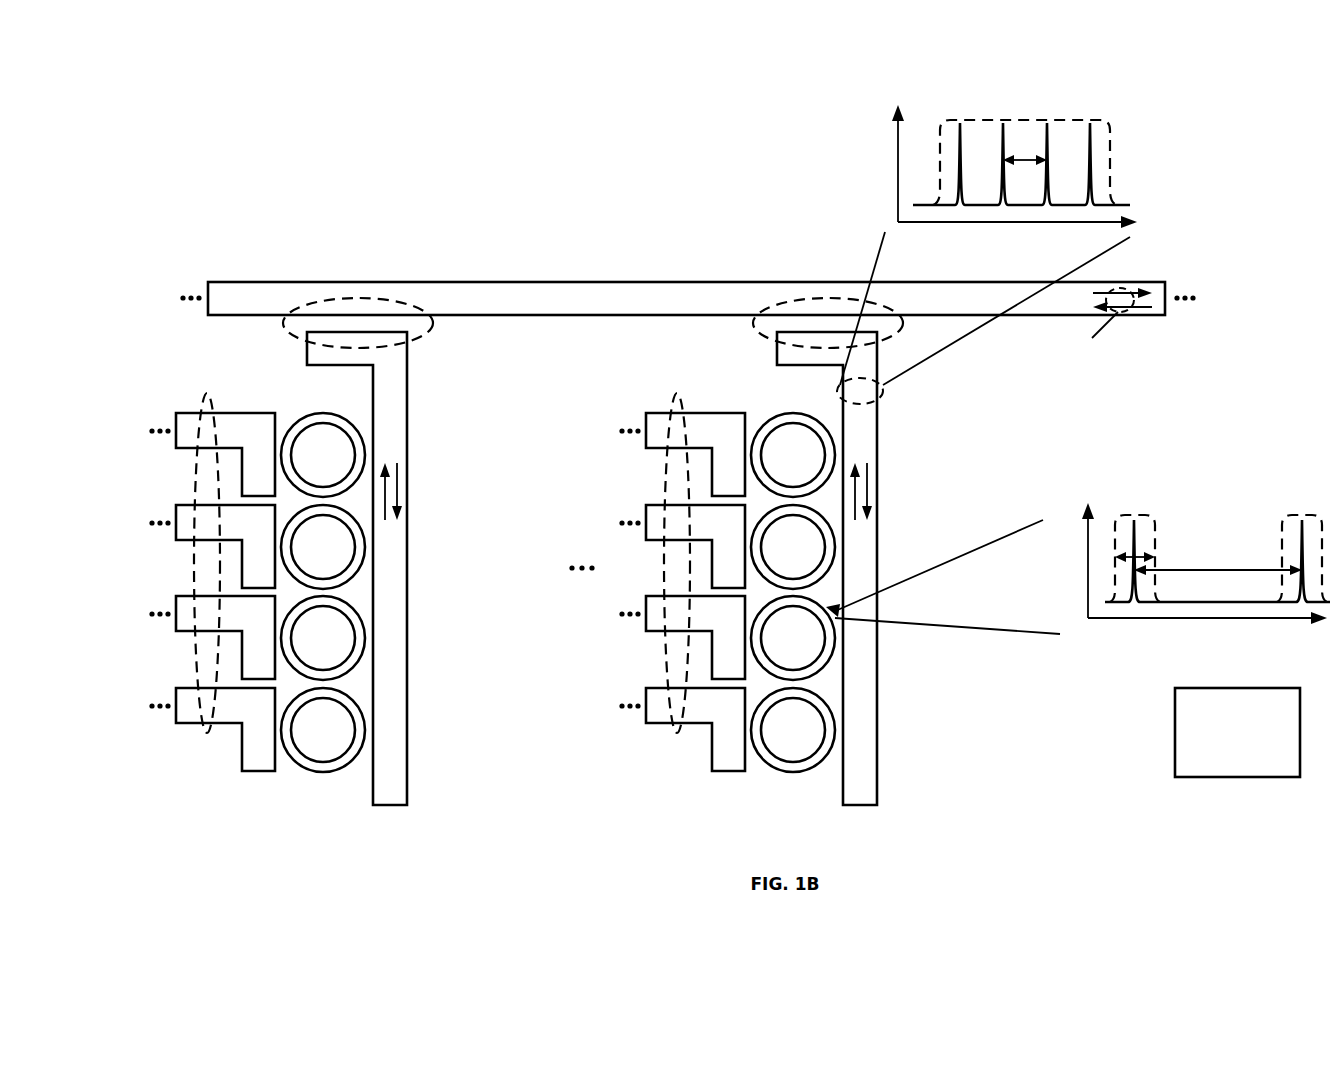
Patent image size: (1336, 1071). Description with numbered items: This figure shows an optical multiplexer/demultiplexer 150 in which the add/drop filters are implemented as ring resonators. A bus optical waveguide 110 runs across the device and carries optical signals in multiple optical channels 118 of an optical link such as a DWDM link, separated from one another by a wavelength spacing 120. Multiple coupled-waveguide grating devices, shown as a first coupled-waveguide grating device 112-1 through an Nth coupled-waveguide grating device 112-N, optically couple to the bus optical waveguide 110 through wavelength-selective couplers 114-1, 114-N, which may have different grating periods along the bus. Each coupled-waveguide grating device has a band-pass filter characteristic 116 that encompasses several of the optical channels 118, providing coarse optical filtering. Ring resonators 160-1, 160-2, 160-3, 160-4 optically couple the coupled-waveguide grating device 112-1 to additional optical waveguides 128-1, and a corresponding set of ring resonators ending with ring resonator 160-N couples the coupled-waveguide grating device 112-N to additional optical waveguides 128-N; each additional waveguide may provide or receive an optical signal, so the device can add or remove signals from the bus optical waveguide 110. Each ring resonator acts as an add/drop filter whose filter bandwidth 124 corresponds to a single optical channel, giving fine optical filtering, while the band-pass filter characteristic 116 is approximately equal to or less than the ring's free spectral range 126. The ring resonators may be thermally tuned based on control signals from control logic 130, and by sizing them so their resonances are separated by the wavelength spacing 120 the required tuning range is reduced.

The optical multiplexer/demultiplexer 150 is at (412, 108).
The bus optical waveguide 110 is at (430, 298).
The wavelength-selective coupler 114-1 is at (358, 298).
The wavelength-selective coupler 114-N is at (795, 298).
The coupled-waveguide grating device 112-1 is at (392, 787).
The coupled-waveguide grating device 112-N is at (862, 787).
The optical waveguide 128-1 is at (207, 409).
The optical waveguides 128-N is at (677, 409).
The ring resonator 160-1 is at (362, 455).
The ring resonator 160-2 is at (362, 547).
The ring resonator 160-3 is at (362, 638).
The ring resonator 160-4 is at (362, 730).
The ring resonator 160-N is at (832, 731).
The optical channels 118 is at (1090, 112).
The band-pass filter characteristic 116 is at (1113, 172).
The wavelength spacing 120 is at (1040, 162).
The filter bandwidth 124 is at (1142, 557).
The free spectral range (FSR) 126 is at (1200, 568).
The control logic 130 is at (1237, 732).